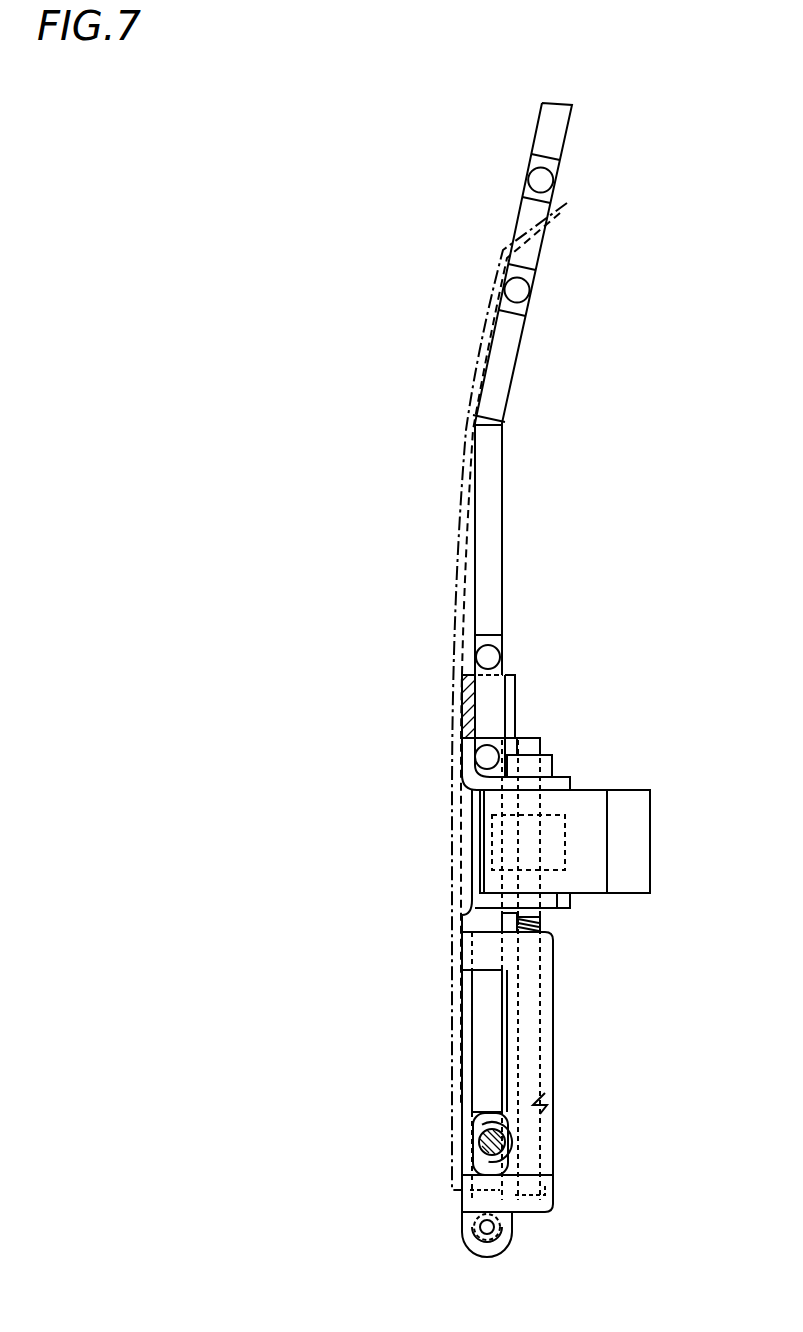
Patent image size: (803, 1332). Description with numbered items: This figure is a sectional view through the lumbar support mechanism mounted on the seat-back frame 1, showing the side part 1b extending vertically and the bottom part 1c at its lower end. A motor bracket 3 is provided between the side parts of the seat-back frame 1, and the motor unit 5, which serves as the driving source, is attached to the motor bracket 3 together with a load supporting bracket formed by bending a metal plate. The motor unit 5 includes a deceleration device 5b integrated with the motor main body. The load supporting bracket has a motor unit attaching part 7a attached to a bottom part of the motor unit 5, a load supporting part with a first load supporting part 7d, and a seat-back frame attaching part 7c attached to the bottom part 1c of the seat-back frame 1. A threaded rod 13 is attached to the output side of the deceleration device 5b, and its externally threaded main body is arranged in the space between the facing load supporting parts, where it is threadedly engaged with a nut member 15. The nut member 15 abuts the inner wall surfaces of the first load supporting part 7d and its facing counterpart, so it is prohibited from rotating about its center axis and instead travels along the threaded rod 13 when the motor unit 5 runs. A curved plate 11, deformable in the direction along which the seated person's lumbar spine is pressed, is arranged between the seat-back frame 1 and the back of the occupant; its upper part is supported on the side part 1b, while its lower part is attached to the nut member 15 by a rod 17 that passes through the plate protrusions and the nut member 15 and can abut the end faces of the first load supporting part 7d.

The seat-back frame 1 is at (576, 674).
The side part 1b is at (555, 148).
The bottom part 1c is at (502, 1228).
The motor bracket 3 is at (462, 764).
The motor unit 5 is at (571, 810).
The deceleration device 5b is at (582, 803).
The motor unit attaching part 7a is at (560, 897).
The seat-back frame attaching part 7c is at (498, 1250).
The first load supporting part 7d is at (533, 1002).
The curved plate 11 is at (452, 1012).
The threaded rod 13 is at (543, 927).
The nut member 15 is at (545, 1095).
The rod 17 is at (507, 1145).